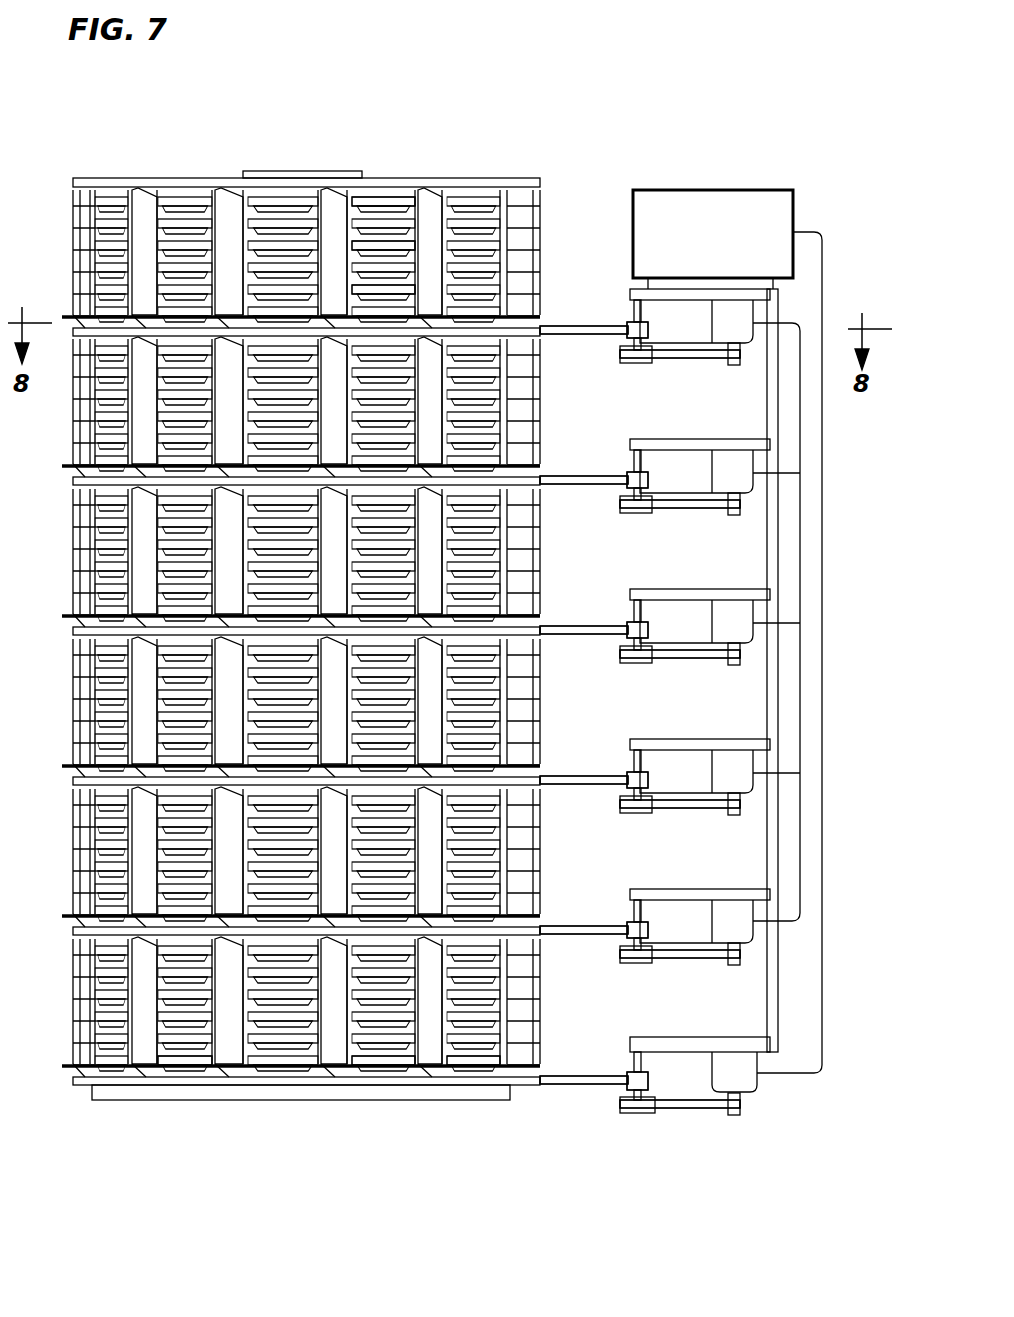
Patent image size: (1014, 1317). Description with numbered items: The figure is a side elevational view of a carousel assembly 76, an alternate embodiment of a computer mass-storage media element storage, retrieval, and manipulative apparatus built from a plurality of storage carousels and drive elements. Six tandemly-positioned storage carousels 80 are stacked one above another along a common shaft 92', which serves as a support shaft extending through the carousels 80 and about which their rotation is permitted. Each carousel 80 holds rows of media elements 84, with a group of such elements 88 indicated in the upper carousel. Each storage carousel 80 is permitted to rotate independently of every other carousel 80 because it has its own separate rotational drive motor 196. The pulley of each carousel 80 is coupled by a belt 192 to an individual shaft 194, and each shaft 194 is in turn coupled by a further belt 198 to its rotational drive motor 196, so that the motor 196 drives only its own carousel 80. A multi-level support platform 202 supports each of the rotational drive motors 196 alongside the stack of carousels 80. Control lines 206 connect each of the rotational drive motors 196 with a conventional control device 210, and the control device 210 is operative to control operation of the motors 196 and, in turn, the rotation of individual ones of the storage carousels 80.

The carousel assembly 76 is at (280, 612).
The storage carousel 80 is at (72, 268).
The trays 84 is at (190, 1066).
The trays 88 is at (395, 290).
The shaft 92' is at (306, 165).
The belt 192 is at (600, 325).
The shaft 194 is at (626, 340).
The rotational drive motor 196 is at (724, 330).
The belt 198 is at (675, 358).
The multi-level support platform 202 is at (802, 520).
The control line 206 is at (824, 690).
The control device 210 is at (712, 190).